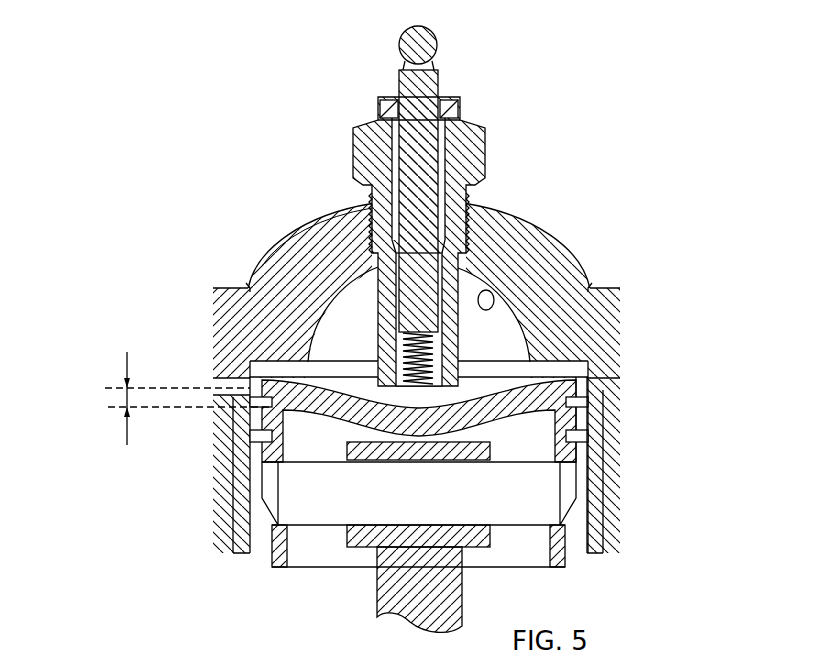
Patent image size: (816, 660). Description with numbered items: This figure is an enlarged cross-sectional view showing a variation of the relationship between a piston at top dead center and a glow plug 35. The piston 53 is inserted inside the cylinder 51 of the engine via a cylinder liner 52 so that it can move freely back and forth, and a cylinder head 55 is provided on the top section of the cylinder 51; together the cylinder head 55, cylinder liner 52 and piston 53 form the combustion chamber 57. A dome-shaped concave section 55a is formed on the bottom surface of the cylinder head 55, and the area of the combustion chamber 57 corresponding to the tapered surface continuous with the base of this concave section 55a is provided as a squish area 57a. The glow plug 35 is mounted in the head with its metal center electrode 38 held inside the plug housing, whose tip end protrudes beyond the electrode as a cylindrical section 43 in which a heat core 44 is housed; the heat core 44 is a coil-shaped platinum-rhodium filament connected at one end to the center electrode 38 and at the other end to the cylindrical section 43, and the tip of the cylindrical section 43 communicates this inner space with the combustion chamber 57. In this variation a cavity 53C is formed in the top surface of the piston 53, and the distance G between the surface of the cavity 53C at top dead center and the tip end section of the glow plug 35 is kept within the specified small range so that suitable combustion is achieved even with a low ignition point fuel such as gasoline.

The glow plug 35 is at (503, 91).
The center electrode 38 is at (423, 78).
The cylindrical section 43 is at (284, 250).
The heat core 44 is at (313, 290).
The cylinder 51 is at (613, 535).
The cylinder liner 52 is at (605, 498).
The piston 53 is at (603, 462).
The cavity 53C is at (550, 310).
The cylinder head 55 is at (613, 313).
The concave section 55a is at (515, 292).
The combustion chamber 57 is at (494, 337).
The squish area 57a is at (250, 286).
The distance G is at (127, 402).